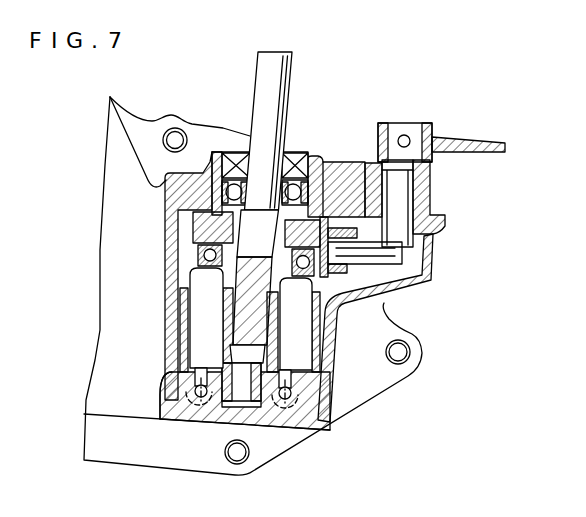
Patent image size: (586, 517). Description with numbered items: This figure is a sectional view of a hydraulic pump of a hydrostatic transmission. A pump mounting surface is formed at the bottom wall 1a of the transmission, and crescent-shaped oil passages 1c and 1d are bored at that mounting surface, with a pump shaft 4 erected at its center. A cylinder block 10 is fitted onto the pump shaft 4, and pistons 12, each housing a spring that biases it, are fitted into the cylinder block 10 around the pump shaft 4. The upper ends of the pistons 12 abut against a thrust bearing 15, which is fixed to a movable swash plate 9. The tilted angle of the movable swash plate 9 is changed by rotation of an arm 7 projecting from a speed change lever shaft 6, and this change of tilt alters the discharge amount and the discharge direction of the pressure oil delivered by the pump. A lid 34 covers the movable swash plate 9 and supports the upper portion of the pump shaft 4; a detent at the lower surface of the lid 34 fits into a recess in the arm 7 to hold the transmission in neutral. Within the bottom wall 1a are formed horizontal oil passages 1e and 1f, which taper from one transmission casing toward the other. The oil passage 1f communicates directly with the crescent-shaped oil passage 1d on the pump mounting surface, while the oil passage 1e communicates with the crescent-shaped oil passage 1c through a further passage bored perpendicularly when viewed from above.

The pump shaft 4 is at (290, 102).
The speed change lever shaft 6 is at (408, 130).
The arm 7 is at (400, 260).
The movable swash plate 9 is at (168, 228).
The cylinder block 10 is at (168, 315).
The pistons 12 is at (217, 322).
The thrust bearing 15 is at (190, 268).
The lid 34 is at (315, 168).
The bottom wall 1a is at (162, 393).
The crescent-shaped oil passage 1c is at (288, 392).
The crescent-shaped oil passage 1d is at (178, 395).
The horizontal oil passage 1e is at (276, 398).
The horizontal oil passage 1f is at (190, 395).